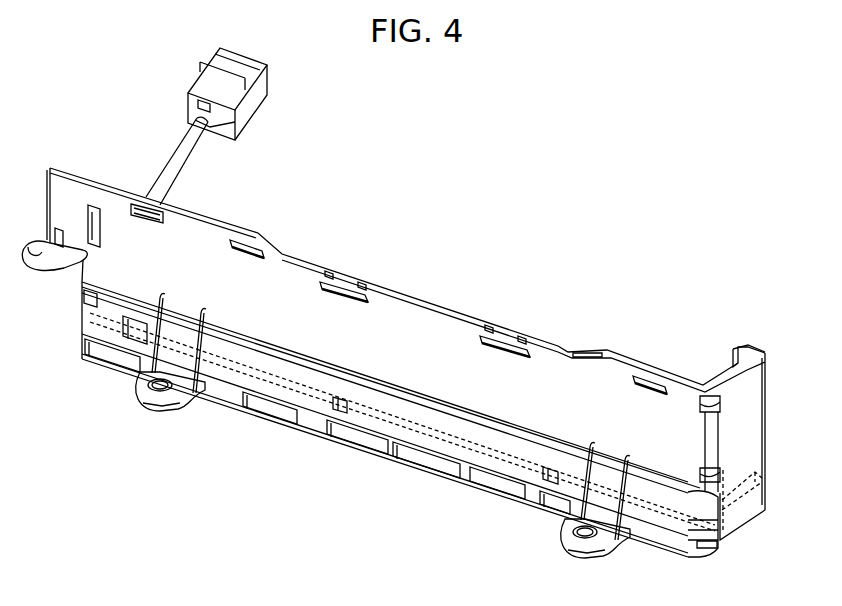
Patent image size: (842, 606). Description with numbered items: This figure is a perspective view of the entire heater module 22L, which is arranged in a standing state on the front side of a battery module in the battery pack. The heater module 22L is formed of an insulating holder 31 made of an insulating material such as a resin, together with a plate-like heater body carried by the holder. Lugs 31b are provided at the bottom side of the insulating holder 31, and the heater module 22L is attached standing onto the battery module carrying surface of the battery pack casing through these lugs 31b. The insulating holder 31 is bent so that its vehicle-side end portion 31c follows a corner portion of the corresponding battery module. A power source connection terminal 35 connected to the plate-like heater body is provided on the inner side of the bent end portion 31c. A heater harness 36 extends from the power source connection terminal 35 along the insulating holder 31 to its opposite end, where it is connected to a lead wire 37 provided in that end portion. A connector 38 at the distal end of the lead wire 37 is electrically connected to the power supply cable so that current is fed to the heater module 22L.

The heater module 22L is at (684, 302).
The insulating holder 31 is at (551, 342).
The lugs 31b is at (160, 410).
The end portion 31c is at (742, 428).
The power source connection terminal 35 is at (757, 497).
The heater harness 36 is at (372, 408).
The lead wire 37 is at (198, 155).
The connector 38 is at (268, 78).